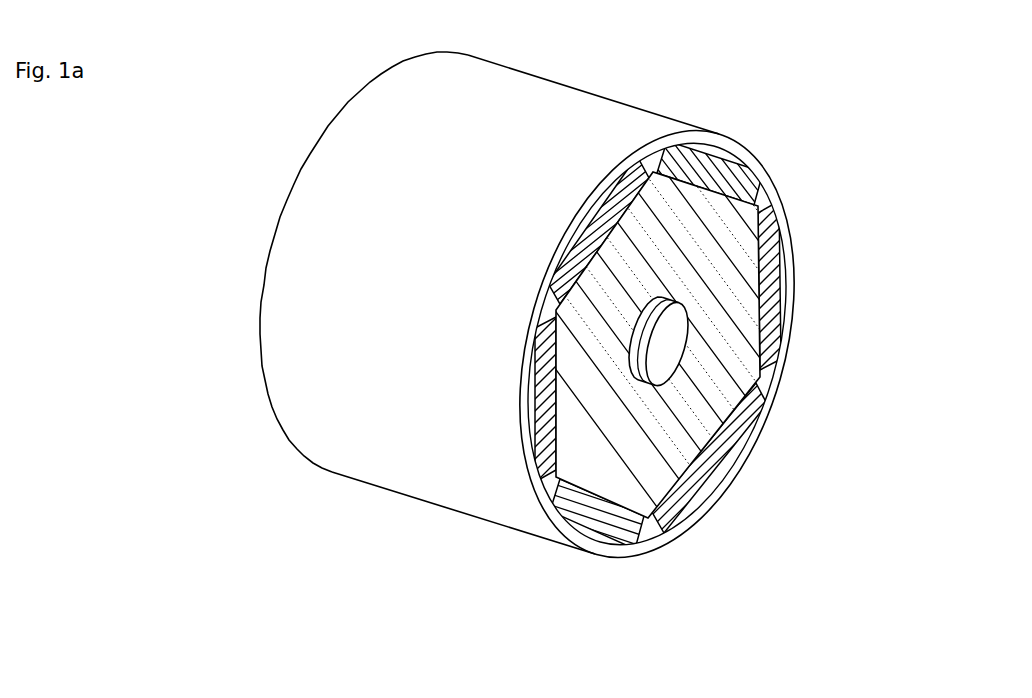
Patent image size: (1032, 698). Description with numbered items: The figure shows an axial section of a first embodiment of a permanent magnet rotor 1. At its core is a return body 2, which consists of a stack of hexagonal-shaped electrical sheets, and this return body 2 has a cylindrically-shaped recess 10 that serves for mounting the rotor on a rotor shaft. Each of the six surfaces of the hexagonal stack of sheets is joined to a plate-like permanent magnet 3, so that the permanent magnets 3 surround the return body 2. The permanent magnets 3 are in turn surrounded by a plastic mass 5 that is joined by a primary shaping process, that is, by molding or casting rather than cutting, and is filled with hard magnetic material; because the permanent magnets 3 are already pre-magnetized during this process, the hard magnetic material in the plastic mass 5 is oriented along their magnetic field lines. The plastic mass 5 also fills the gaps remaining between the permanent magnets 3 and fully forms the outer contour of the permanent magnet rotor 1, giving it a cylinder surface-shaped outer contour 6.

The permanent magnet rotor 1 is at (795, 100).
The return body 2 is at (707, 307).
The permanent magnets 3 is at (688, 178).
The plastic mass 5 is at (708, 492).
The cylinder surface-shaped outer contour 6 is at (795, 237).
The cylindrically-shaped recess 10 is at (657, 342).